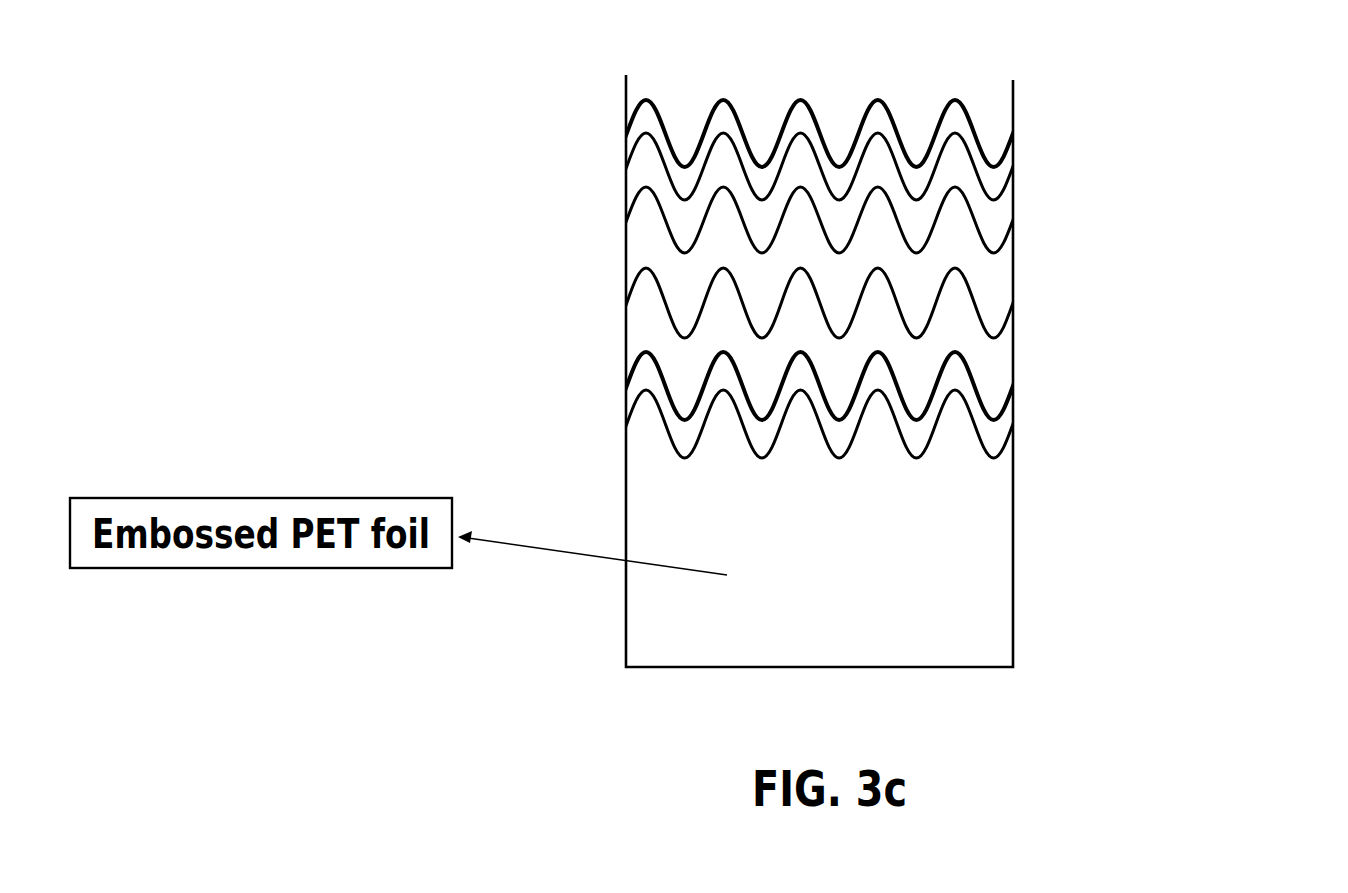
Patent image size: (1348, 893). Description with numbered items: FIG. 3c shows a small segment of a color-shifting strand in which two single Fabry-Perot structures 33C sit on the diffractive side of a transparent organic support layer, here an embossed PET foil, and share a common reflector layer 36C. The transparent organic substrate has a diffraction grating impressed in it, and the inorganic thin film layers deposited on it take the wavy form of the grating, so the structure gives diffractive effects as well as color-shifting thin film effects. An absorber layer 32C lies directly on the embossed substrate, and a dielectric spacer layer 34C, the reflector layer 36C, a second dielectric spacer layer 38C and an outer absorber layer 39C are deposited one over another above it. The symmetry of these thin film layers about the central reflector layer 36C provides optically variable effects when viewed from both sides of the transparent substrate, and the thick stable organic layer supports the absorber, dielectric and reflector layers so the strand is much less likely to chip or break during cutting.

The absorber layer 39C is at (957, 100).
The dielectric spacer layer 38C is at (997, 216).
The reflector layer 36C is at (997, 276).
The dielectric spacer layer 34C is at (997, 360).
The absorber layer 32C is at (997, 430).
The Fabry-Perot structures 33C is at (1214, 82).